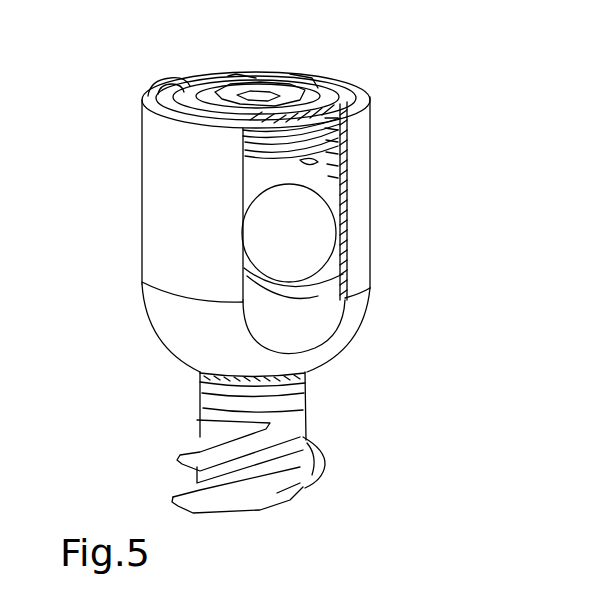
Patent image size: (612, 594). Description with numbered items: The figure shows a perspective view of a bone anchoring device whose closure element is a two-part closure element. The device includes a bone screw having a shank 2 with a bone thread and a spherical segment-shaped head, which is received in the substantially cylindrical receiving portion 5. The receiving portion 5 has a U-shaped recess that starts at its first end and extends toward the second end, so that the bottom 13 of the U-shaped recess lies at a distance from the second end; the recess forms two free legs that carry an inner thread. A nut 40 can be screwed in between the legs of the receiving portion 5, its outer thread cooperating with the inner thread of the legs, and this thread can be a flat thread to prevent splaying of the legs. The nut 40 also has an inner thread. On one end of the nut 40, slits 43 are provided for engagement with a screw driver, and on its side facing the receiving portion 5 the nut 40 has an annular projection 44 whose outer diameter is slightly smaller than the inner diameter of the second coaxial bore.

The receiving portion 5 is at (142, 222).
The shank 2 is at (322, 488).
The bottom of the U-shaped recess 13 is at (318, 297).
The nut 40 is at (362, 88).
The slits 43 is at (312, 75).
The annular projection 44 is at (300, 176).